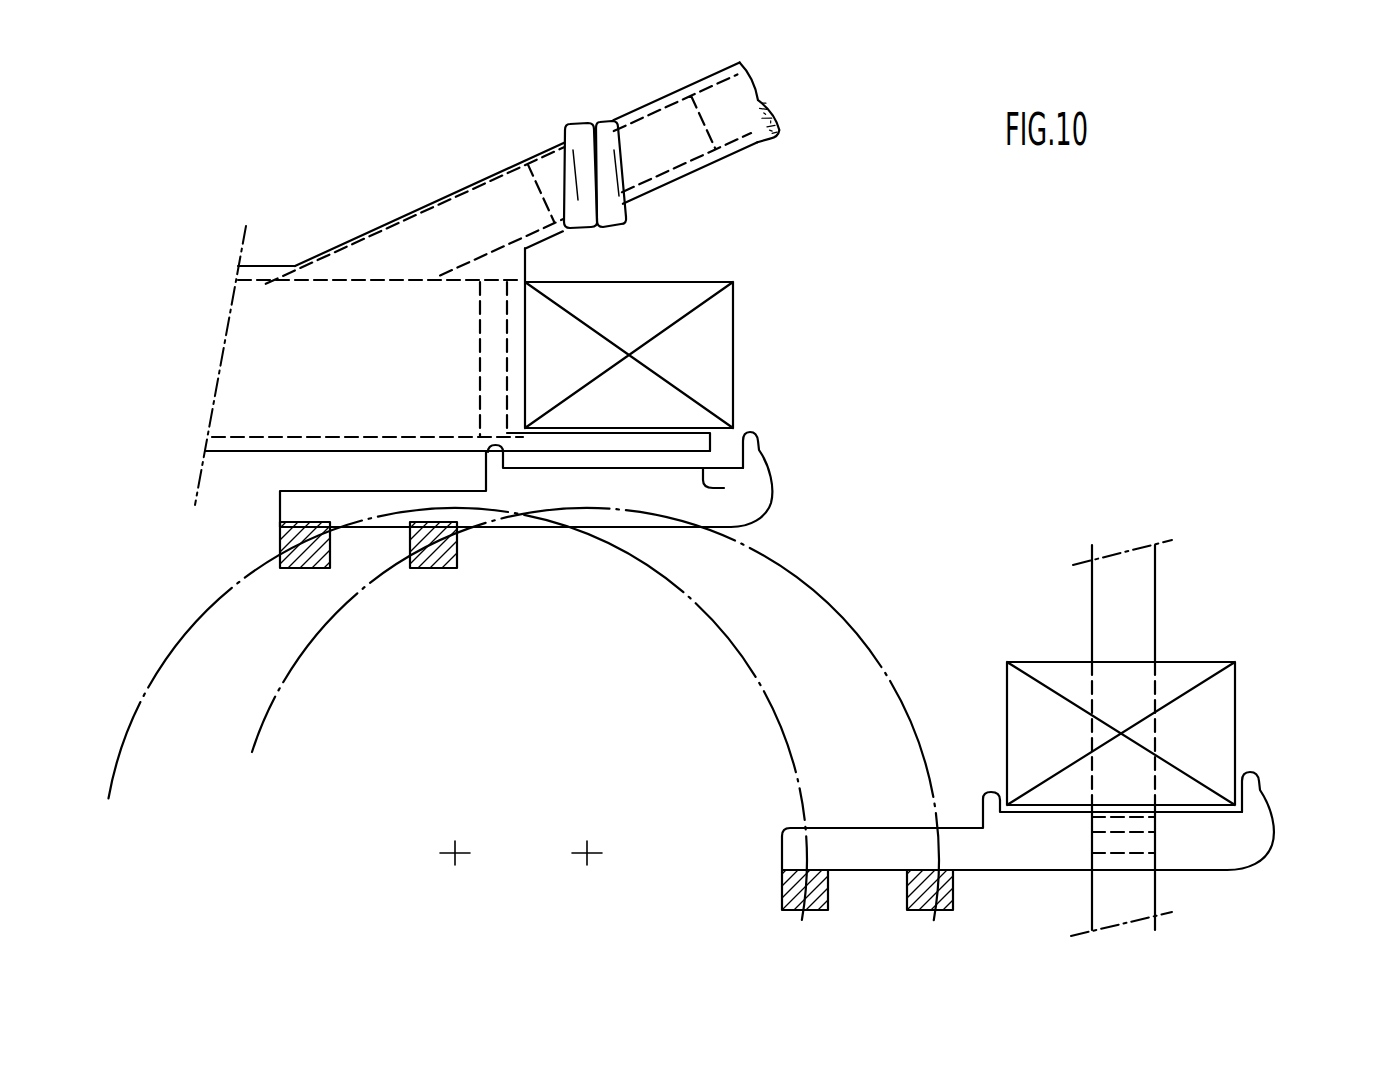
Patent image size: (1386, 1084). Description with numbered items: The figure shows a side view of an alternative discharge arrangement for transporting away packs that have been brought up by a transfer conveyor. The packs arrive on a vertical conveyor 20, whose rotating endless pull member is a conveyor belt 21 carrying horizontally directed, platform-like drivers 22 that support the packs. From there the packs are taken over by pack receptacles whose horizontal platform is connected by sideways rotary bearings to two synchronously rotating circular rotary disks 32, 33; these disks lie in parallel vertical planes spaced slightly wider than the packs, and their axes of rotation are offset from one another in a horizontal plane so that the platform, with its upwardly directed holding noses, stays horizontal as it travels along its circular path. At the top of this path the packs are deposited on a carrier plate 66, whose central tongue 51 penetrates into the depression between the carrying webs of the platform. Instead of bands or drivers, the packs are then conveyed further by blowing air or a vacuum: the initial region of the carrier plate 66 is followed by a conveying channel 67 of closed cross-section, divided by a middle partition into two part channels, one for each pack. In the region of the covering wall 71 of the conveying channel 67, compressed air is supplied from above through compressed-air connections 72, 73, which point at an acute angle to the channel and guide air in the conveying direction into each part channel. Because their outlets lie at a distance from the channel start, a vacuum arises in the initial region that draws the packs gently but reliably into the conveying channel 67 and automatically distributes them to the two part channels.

The vertical conveyor 20 is at (1175, 582).
The conveyor belt 21 is at (1139, 572).
The driver 22 is at (1137, 832).
The rotary disk 32 is at (138, 740).
The rotary disk 33 is at (798, 602).
The central tongue 51 is at (715, 442).
The carrier plate 66 is at (227, 447).
The conveying channel 67 is at (208, 357).
The covering wall 71 is at (259, 272).
The compressed-air connection 72 is at (489, 171).
The compressed-air connection 73 is at (467, 210).